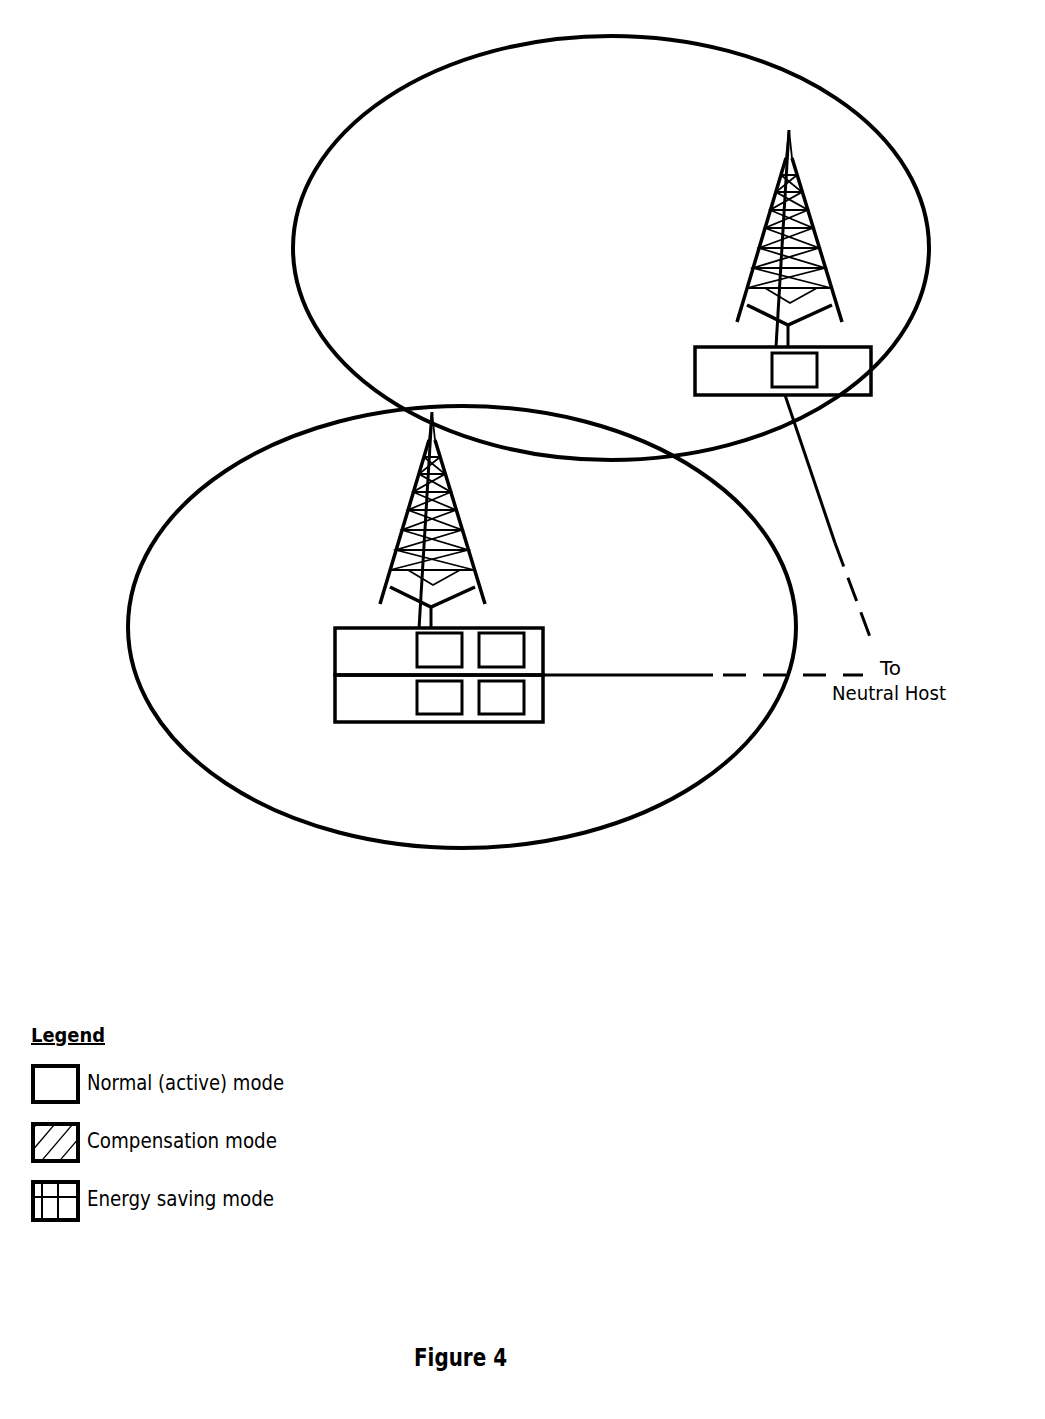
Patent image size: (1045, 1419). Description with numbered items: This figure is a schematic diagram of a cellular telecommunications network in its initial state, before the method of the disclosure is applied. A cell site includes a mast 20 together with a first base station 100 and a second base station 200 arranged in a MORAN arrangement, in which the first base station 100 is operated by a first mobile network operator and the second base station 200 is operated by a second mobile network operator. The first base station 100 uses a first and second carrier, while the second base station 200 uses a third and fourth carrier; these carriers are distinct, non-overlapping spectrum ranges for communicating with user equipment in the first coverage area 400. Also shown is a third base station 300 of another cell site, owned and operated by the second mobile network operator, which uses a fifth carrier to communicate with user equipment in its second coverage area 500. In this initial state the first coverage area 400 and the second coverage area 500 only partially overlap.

The second coverage area 500 is at (418, 82).
The first coverage area 400 is at (255, 450).
The third base station 300 is at (720, 347).
The mast 20 is at (420, 482).
The first base station 100 is at (335, 653).
The second base station 200 is at (335, 698).